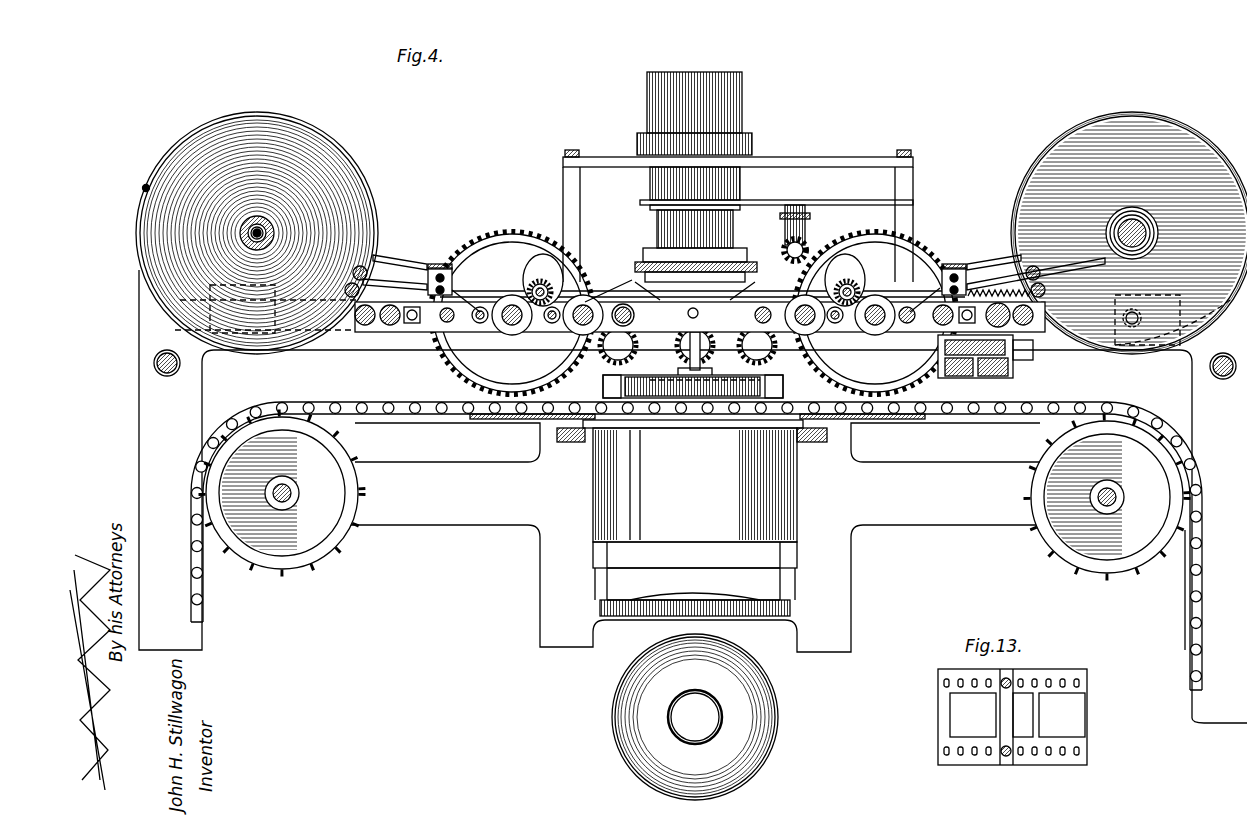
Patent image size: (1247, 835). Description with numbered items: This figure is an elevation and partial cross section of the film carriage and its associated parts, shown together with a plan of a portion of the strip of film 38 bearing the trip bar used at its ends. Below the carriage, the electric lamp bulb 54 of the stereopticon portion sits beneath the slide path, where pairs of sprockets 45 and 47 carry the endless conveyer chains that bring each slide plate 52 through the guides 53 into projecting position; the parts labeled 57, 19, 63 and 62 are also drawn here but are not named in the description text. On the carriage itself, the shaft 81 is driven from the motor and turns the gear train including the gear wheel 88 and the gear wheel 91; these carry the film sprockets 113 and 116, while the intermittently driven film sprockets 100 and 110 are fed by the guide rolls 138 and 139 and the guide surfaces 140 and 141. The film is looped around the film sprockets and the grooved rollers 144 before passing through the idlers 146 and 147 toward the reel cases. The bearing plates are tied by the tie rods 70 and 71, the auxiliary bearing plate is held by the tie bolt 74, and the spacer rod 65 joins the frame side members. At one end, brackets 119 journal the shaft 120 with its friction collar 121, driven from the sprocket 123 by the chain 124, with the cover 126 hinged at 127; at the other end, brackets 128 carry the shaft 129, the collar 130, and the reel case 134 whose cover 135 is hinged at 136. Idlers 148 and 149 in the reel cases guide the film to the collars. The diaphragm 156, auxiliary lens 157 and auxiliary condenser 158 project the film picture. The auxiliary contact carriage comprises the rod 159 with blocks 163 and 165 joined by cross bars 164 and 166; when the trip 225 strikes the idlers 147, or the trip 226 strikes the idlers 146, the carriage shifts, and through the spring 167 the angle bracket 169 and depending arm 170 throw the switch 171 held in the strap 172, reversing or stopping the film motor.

In FIG. 4, the cover 135 is at (192, 150).
In FIG. 4, the hinge 136 is at (145, 186).
In FIG. 4, the collar 130 is at (240, 233).
In FIG. 4, the shaft 129 is at (243, 243).
In FIG. 4, the reel case 134 is at (165, 290).
In FIG. 4, the brackets 128 is at (172, 330).
In FIG. 4, the trip 225 is at (263, 222).
In FIG. 13, the trip 225 is at (1003, 722).
In FIG. 4, the cover 126 is at (1223, 147).
In FIG. 4, the collar 121 is at (1146, 226).
In FIG. 4, the shaft 120 is at (1148, 240).
In FIG. 4, the hinge 127 is at (1245, 202).
In FIG. 4, the sprocket 123 is at (1207, 268).
In FIG. 4, the brackets 119 is at (1170, 284).
In FIG. 4, the trip 226 is at (1110, 274).
In FIG. 4, the lamp house 57 is at (742, 118).
In FIG. 4, the diaphragm 156 is at (840, 205).
In FIG. 4, the auxiliary lens 157 is at (735, 230).
In FIG. 4, the rod 159 is at (592, 272).
In FIG. 4, the guide roll 138 is at (628, 282).
In FIG. 4, the guide roll 139 is at (782, 262).
In FIG. 4, the gear wheel 91 is at (512, 313).
In FIG. 4, the gear wheel 88 is at (875, 313).
In FIG. 4, the film sprockets 116 is at (527, 336).
In FIG. 4, the intermittent gear 19 is at (735, 382).
In FIG. 4, the film sprockets 100 is at (795, 359).
In FIG. 4, the grooved rollers 144 is at (565, 282).
In FIG. 4, the blocks 165 is at (530, 278).
In FIG. 4, the idlers 146 is at (880, 282).
In FIG. 4, the spring 167 is at (1018, 270).
In FIG. 4, the spacer rod 65 is at (365, 326).
In FIG. 4, the guide roller 63 is at (390, 326).
In FIG. 4, the tie rod 71 is at (446, 326).
In FIG. 4, the tie bolt 74 is at (446, 328).
In FIG. 4, the film sprockets 110 is at (650, 318).
In FIG. 4, the guide surface 140 is at (656, 311).
In FIG. 4, the shaft 81 is at (699, 313).
In FIG. 4, the guide surface 141 is at (700, 352).
In FIG. 4, the film sprockets 113 is at (886, 336).
In FIG. 4, the tie rod 70 is at (920, 309).
In FIG. 4, the roller 62 is at (1002, 333).
In FIG. 4, the idlers 148 is at (1046, 292).
In FIG. 4, the idlers 147 is at (440, 266).
In FIG. 4, the idlers 149 is at (386, 260).
In FIG. 4, the cross bar 166 is at (462, 262).
In FIG. 4, the blocks 163 is at (946, 265).
In FIG. 4, the cross bar 164 is at (957, 270).
In FIG. 4, the chain 124 is at (984, 262).
In FIG. 4, the angle bracket 169 is at (1040, 336).
In FIG. 4, the strap 172 is at (948, 370).
In FIG. 4, the depending arm 170 is at (1012, 376).
In FIG. 4, the switch 171 is at (985, 418).
In FIG. 4, the sprockets 47 is at (300, 498).
In FIG. 4, the sprockets 45 is at (1110, 575).
In FIG. 4, the slide plate 52 is at (516, 423).
In FIG. 4, the guides 53 is at (876, 423).
In FIG. 4, the auxiliary condenser 158 is at (718, 600).
In FIG. 4, the electric lamp bulb 54 is at (695, 717).
In FIG. 13, the strip of film 38 is at (940, 707).